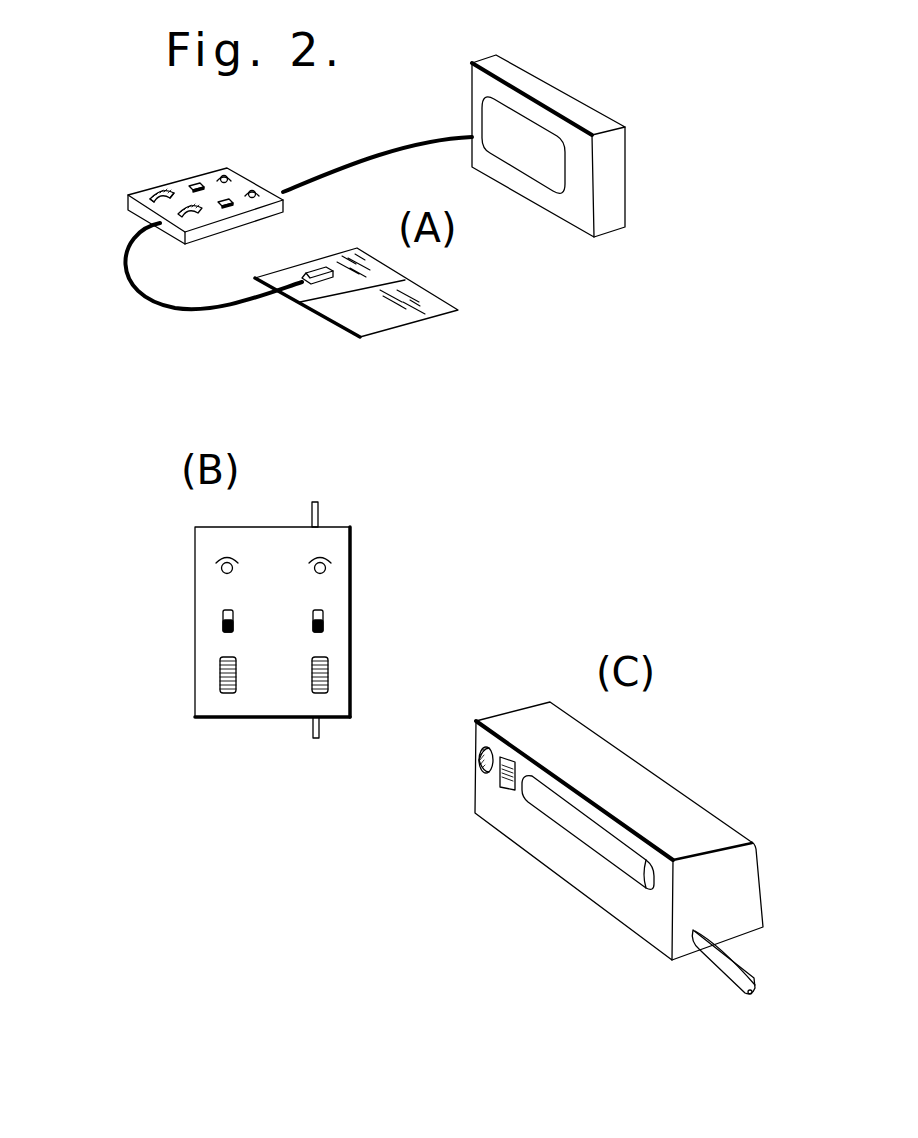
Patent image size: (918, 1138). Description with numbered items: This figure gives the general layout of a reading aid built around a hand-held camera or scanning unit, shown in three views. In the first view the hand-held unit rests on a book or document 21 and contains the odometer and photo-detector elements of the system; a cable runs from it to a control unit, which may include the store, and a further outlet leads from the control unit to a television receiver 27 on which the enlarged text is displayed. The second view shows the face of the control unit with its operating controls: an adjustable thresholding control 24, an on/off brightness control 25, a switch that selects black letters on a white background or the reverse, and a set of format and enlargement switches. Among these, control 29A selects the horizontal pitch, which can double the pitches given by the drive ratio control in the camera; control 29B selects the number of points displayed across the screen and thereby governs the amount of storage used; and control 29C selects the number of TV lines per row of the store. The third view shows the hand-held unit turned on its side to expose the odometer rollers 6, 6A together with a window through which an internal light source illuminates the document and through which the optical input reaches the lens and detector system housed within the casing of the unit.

The odometer roller 6 is at (578, 828).
The odometer roller 6A is at (478, 760).
The book or document 21 is at (385, 318).
The adjustable thresholding control 24 is at (328, 670).
The on/off brightness control 25 is at (220, 670).
The television receiver 27 is at (522, 82).
The horizontal pitch control 29A is at (222, 622).
The points-across-screen control 29B is at (326, 570).
The TV lines per row control 29C is at (222, 570).